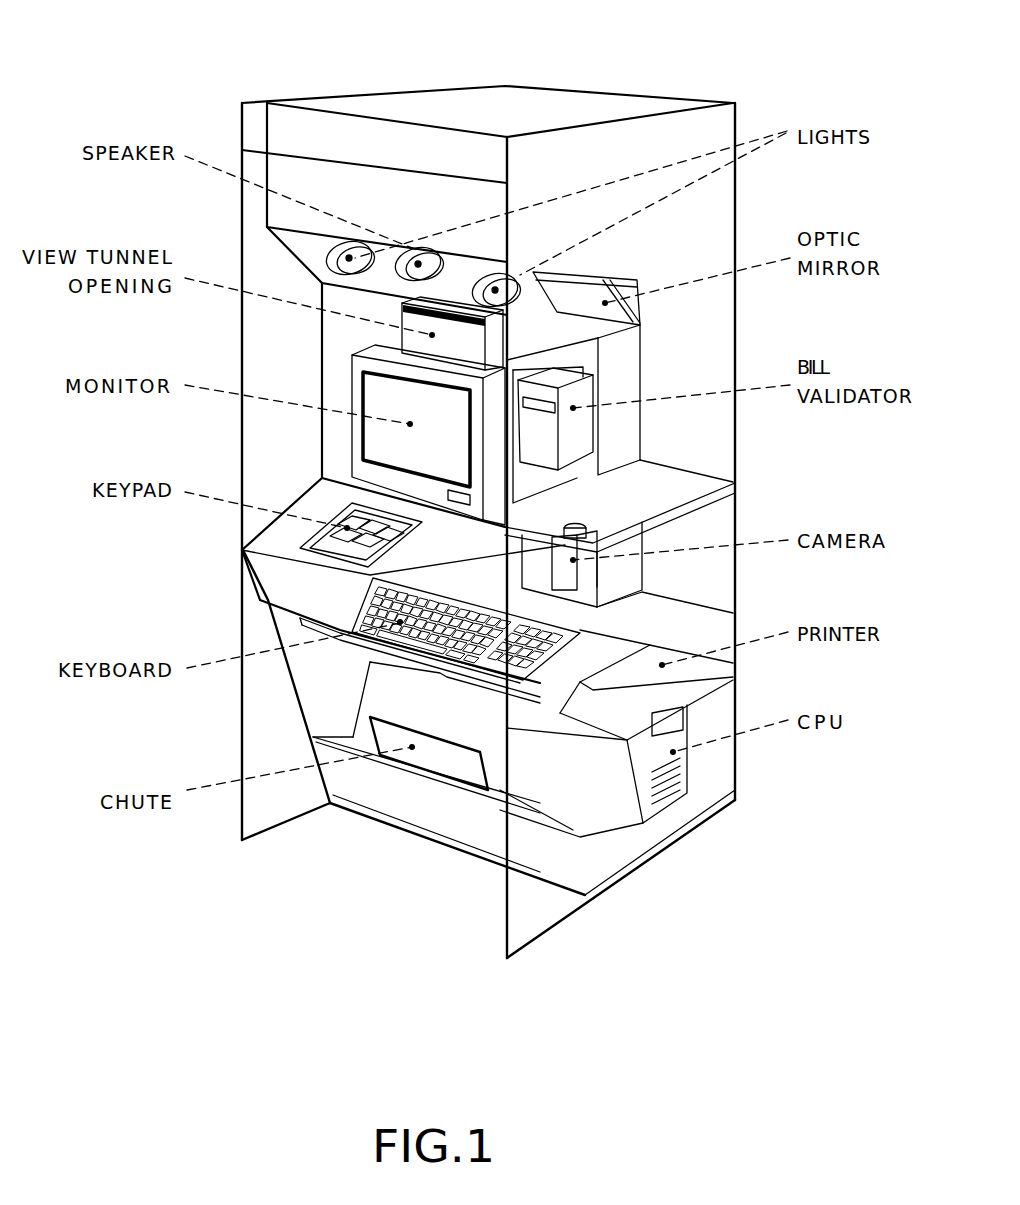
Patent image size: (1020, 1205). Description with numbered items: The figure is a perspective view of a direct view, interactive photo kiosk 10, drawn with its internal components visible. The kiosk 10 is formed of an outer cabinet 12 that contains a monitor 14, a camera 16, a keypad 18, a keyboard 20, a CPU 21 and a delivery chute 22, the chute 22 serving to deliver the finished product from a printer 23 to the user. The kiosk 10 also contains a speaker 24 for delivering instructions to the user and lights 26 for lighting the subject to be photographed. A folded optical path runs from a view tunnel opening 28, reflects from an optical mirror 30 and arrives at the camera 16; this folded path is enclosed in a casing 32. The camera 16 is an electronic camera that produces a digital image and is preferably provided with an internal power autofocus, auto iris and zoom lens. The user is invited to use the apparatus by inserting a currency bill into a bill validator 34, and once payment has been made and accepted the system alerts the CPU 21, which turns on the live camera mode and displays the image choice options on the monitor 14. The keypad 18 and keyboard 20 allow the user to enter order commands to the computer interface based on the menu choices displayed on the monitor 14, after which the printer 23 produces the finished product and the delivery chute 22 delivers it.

The photo kiosk 10 is at (624, 69).
The outer cabinet 12 is at (720, 126).
The monitor 14 is at (377, 395).
The camera 16 is at (583, 572).
The keypad 18 is at (305, 543).
The keyboard 20 is at (398, 623).
The CPU 21 is at (700, 708).
The delivery chute 22 is at (433, 750).
The printer 23 is at (620, 687).
The speaker 24 is at (428, 276).
The lights 26 is at (347, 255).
The view tunnel opening 28 is at (432, 335).
The optical mirror 30 is at (640, 318).
The casing 32 is at (625, 442).
The bill validator 34 is at (582, 398).